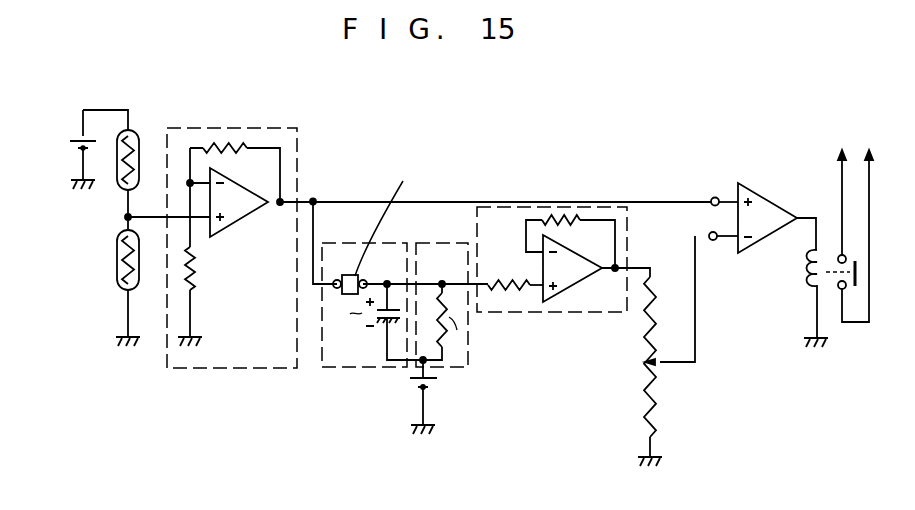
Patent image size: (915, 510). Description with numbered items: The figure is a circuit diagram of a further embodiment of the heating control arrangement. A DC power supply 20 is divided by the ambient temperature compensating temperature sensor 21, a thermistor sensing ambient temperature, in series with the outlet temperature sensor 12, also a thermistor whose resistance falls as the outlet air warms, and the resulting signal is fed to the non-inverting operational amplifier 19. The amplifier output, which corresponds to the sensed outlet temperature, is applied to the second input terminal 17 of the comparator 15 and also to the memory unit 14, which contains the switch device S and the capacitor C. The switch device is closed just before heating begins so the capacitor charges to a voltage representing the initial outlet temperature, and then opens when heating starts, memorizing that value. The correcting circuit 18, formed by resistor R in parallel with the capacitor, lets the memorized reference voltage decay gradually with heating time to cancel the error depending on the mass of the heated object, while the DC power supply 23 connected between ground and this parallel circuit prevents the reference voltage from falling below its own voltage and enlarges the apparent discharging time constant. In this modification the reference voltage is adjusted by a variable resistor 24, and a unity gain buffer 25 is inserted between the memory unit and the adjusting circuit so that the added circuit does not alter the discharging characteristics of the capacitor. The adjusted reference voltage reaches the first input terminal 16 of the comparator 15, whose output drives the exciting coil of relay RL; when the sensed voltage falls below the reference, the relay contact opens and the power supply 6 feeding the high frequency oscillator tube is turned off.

The power supply 6 is at (854, 125).
The outlet temperature sensor 12 is at (116, 251).
The memory unit 14 is at (363, 368).
The comparator 15 is at (765, 198).
The first input terminal 16 is at (713, 241).
The second input terminal 17 is at (716, 197).
The correcting circuit 18 is at (470, 361).
The non-inverting operational amplifier 19 is at (298, 146).
The DC power supply 20 is at (66, 134).
The ambient temperature compensating temperature sensor 21 is at (136, 133).
The DC power supply 23 is at (409, 393).
The variable resistor 24 is at (643, 363).
The unity gain buffer 25 is at (567, 313).